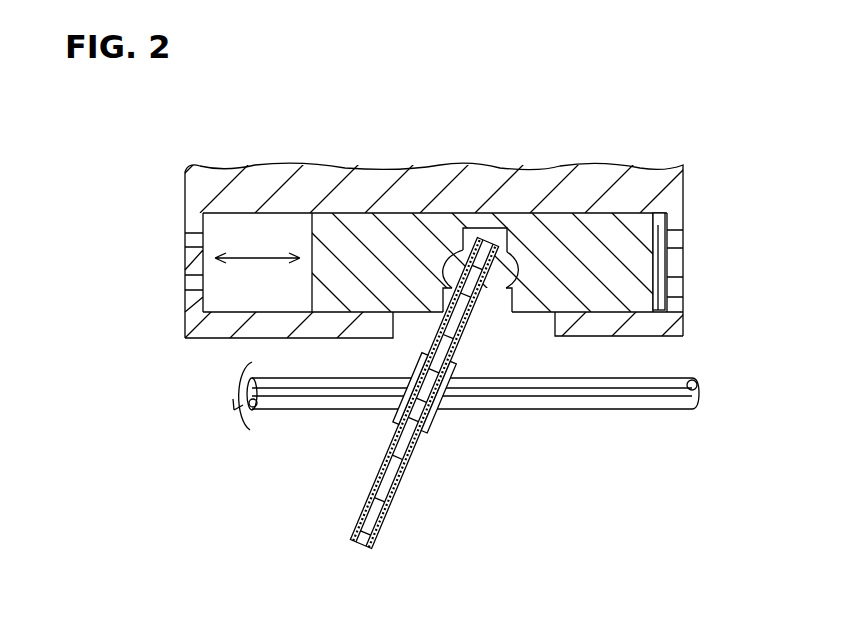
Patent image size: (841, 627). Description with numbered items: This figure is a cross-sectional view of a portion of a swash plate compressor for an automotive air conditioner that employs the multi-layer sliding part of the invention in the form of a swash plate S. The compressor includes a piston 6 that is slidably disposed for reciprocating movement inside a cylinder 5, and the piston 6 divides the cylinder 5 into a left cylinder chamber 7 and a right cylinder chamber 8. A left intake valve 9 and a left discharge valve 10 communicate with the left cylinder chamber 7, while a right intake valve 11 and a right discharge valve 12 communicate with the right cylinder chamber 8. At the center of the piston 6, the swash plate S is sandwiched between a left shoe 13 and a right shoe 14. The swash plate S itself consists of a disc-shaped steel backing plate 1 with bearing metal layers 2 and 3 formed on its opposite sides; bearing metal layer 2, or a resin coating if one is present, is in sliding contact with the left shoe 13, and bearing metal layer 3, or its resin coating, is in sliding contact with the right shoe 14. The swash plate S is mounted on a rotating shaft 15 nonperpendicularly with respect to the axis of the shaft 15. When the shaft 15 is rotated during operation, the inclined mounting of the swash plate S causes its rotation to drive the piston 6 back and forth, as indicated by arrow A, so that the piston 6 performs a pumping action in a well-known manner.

The backing plate 1 is at (400, 419).
The bearing metal layer 2 is at (373, 487).
The bearing metal layer 3 is at (395, 500).
The cylinder 5 is at (393, 217).
The piston 6 is at (541, 237).
The left cylinder chamber 7 is at (247, 232).
The right cylinder chamber 8 is at (657, 232).
The left intake valve 9 is at (185, 287).
The left discharge valve 10 is at (185, 234).
The right intake valve 11 is at (683, 288).
The right discharge valve 12 is at (683, 236).
The left shoe 13 is at (437, 283).
The right shoe 14 is at (500, 283).
The rotating shaft 15 is at (303, 398).
The arrow A is at (257, 271).
The swash plate S is at (464, 449).